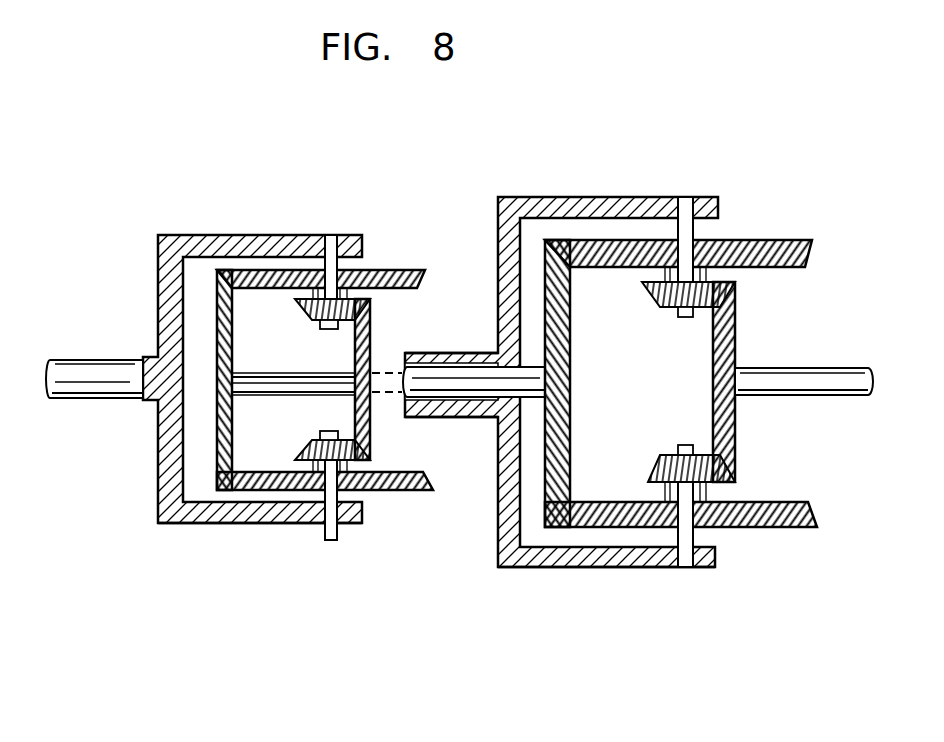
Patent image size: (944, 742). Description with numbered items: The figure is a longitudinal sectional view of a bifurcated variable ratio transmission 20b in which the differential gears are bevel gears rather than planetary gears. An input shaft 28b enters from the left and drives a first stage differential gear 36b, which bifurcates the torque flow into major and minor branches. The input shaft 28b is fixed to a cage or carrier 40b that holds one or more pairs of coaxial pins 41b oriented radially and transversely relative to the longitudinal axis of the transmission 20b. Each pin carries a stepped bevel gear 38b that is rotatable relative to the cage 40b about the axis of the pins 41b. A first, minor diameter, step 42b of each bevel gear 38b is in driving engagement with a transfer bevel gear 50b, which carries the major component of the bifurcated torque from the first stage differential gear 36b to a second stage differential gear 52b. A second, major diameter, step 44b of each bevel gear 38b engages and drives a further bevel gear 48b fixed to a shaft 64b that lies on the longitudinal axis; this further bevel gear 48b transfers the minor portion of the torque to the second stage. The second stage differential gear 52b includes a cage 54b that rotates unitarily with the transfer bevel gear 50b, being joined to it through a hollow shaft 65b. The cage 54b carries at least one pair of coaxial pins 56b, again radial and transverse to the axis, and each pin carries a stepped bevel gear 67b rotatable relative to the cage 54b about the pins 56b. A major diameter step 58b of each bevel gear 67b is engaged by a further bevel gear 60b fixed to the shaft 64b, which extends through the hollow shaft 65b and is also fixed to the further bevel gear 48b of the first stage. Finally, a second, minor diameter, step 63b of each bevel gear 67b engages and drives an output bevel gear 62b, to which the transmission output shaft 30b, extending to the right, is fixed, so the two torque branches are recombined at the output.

The bifurcated variable ratio transmission 20b is at (335, 615).
The input shaft 28b is at (93, 392).
The transmission output shaft 30b is at (848, 385).
The first stage differential gear 36b is at (165, 568).
The stepped bevel gear 38b is at (388, 267).
The cage or carrier 40b is at (258, 523).
The coaxial pins 41b is at (330, 250).
The first minor diameter step 42b is at (308, 305).
The second major diameter step 44b is at (424, 282).
The further bevel gear 48b is at (230, 408).
The transfer bevel gear 50b is at (370, 330).
The second stage differential gear 52b is at (558, 588).
The cage 54b is at (588, 568).
The coaxial pins 56b is at (687, 317).
The major diameter step 58b is at (802, 257).
The further bevel gear 60b is at (570, 418).
The output bevel gear 62b is at (735, 428).
The second minor diameter step 63b is at (658, 295).
The shaft 64b is at (492, 402).
The hollow shaft 65b is at (470, 352).
The stepped bevel gear 67b is at (760, 238).